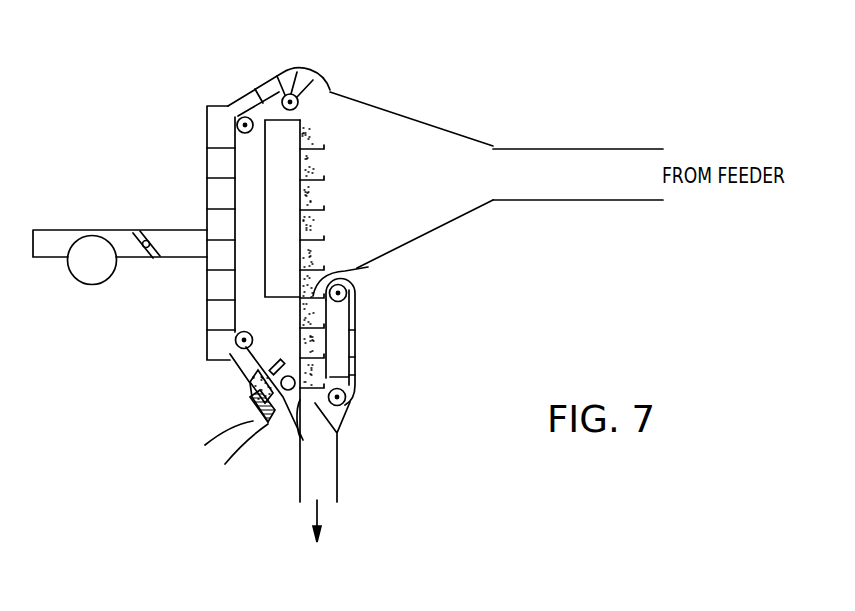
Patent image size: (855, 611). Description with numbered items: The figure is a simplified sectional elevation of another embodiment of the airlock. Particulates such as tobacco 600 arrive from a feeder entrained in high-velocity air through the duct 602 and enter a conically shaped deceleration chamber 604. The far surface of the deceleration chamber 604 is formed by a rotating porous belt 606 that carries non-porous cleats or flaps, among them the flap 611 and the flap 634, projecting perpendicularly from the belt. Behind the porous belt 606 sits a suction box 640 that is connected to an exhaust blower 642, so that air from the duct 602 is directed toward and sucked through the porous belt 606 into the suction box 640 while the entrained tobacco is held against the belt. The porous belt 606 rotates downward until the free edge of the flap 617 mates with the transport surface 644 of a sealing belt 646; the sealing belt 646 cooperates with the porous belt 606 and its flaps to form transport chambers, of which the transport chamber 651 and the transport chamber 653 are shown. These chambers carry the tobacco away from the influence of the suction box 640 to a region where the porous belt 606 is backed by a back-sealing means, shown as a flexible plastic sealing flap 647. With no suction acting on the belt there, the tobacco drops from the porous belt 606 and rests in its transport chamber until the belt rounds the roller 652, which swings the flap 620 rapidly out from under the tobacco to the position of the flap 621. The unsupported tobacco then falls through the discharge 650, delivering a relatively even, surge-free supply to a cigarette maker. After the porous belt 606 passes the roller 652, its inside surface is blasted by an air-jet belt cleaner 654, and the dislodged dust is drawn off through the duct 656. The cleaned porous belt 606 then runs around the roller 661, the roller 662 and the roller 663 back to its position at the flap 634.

The tobacco 600 is at (600, 155).
The duct 602 is at (570, 168).
The deceleration chamber 604 is at (410, 128).
The porous belt 606 is at (300, 130).
The cleat or flap 611 is at (300, 118).
The flap 617 is at (368, 268).
The flap 620 is at (338, 437).
The flap 621 is at (250, 392).
The flap 634 is at (313, 76).
The suction box 640 is at (290, 231).
The exhaust blower 642 is at (93, 248).
The transport surface 644 is at (340, 340).
The sealing belt 646 is at (356, 366).
The sealing flap 647 is at (300, 323).
The discharge 650 is at (313, 496).
The transport chamber 651 is at (340, 316).
The roller 652 is at (287, 392).
The transport chamber 653 is at (356, 388).
The air-jet belt cleaner 654 is at (250, 382).
The duct 656 is at (250, 406).
The roller 661 is at (236, 344).
The roller 662 is at (240, 118).
The roller 663 is at (294, 92).